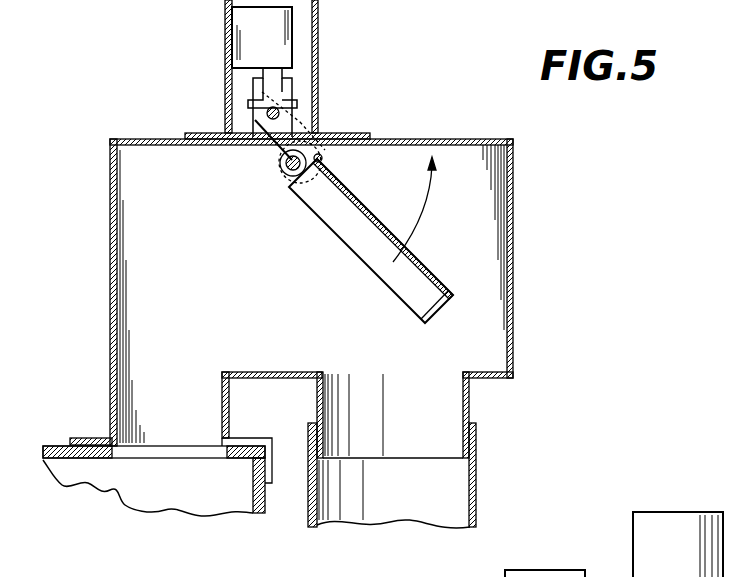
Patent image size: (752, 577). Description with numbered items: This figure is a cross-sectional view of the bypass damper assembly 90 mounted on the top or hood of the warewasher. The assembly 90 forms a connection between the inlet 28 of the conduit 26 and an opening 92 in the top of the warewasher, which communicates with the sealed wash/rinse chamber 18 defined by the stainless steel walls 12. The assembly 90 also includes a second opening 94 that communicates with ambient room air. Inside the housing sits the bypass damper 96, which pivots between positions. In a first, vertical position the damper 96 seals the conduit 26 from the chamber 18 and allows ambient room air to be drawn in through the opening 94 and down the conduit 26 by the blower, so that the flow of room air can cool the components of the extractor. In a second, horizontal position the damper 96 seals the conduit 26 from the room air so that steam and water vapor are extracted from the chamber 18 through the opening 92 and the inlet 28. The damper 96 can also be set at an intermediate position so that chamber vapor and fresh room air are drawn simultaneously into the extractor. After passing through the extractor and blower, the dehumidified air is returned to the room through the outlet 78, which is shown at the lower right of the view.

The walls 12 is at (62, 442).
The wash/rinse chamber 18 is at (88, 483).
The conduit 26 is at (477, 477).
The inlet 28 is at (477, 428).
The outlet 78 is at (547, 576).
The bypass damper assembly 90 is at (513, 210).
The opening 92 is at (168, 452).
The opening 94 is at (403, 140).
The bypass damper 96 is at (357, 207).